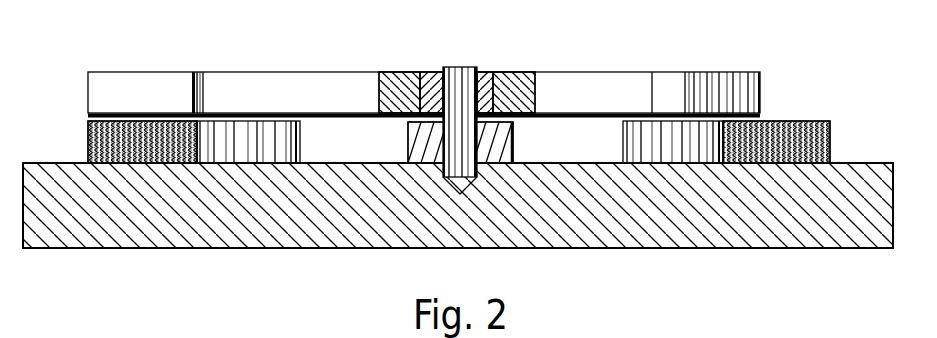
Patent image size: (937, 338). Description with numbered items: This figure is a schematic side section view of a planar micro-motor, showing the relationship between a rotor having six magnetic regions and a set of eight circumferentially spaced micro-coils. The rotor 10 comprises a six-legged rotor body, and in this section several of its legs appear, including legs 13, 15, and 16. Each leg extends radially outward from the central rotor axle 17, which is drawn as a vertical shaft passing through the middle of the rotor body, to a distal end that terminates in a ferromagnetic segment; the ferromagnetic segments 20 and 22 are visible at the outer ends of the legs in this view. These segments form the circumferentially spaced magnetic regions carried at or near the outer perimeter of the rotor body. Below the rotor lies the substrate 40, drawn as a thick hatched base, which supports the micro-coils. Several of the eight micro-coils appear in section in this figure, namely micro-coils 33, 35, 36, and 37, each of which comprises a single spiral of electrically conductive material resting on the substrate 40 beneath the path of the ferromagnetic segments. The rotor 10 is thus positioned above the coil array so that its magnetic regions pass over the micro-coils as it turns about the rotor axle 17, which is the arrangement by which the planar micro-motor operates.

The rotor 10 is at (87, 78).
The leg 13 is at (302, 106).
The leg 15 is at (597, 102).
The leg 16 is at (536, 78).
The rotor axle 17 is at (465, 67).
The ferromagnetic segment 20 is at (88, 109).
The ferromagnetic segment 22 is at (761, 92).
The micro-coil 33 is at (88, 156).
The micro-coil 35 is at (512, 127).
The micro-coil 36 is at (623, 150).
The micro-coil 37 is at (830, 150).
The substrate 40 is at (346, 217).